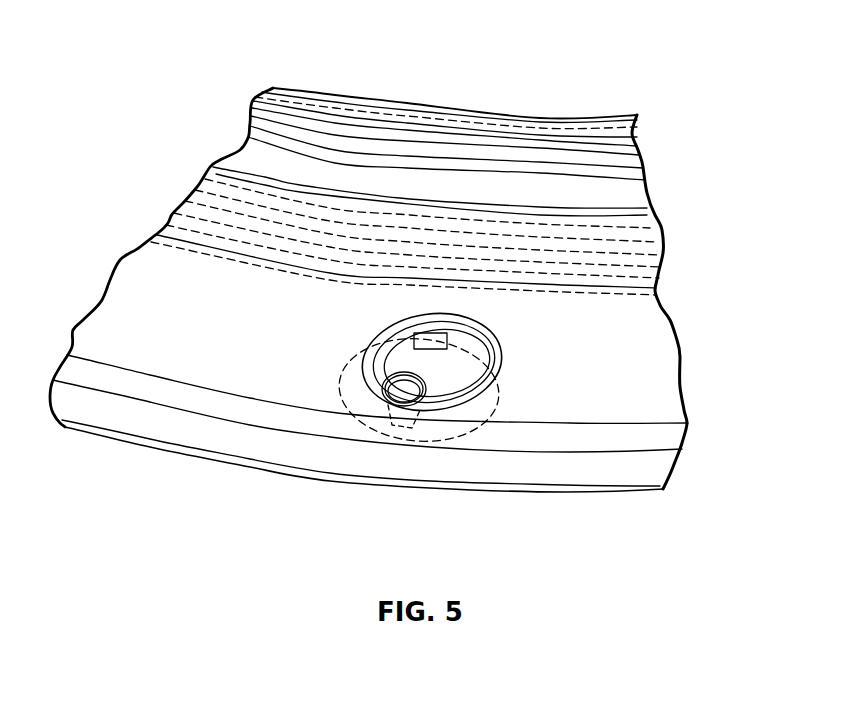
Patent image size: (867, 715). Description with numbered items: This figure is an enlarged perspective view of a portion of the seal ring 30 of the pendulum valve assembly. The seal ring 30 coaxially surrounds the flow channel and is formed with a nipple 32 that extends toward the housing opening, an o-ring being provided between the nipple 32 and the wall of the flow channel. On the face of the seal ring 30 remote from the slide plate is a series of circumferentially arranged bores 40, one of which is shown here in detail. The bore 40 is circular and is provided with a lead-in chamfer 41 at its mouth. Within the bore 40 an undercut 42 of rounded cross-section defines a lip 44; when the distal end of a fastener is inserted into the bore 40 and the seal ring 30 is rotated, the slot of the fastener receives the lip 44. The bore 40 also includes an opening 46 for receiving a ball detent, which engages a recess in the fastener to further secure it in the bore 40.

The seal ring 30 is at (357, 86).
The nipple 32 is at (633, 167).
The bore 40 is at (490, 344).
The lead-in chamfer 41 is at (481, 326).
The undercut 42 is at (337, 377).
The lip 44 is at (387, 346).
The opening 46 is at (425, 391).